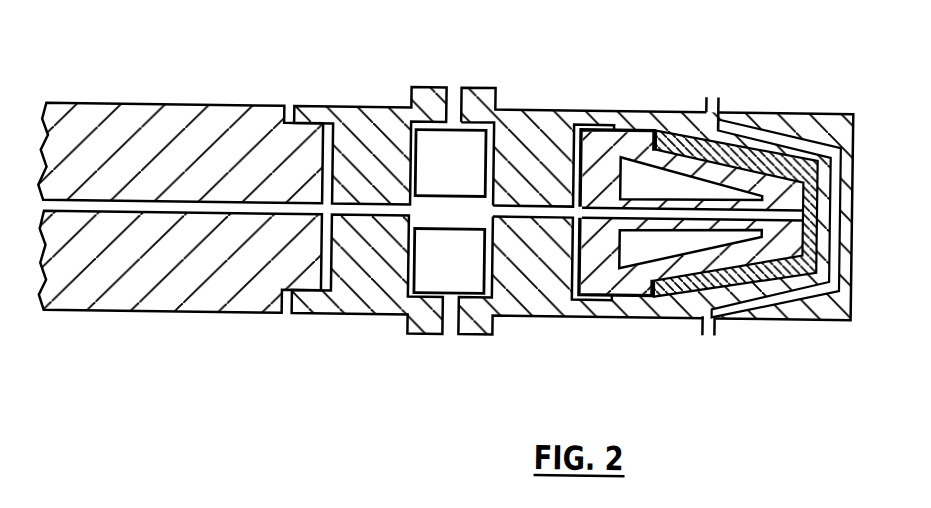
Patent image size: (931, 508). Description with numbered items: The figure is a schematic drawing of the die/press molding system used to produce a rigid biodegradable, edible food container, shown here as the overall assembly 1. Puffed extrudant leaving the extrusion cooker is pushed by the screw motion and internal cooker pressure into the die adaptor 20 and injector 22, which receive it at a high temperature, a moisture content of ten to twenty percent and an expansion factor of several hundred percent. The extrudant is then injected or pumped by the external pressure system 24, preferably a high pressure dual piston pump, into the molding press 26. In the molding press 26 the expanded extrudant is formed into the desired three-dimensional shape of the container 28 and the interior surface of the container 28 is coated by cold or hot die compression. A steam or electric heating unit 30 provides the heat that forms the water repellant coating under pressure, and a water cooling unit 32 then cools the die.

The insulating body 1 is at (221, 315).
The contact carrier 20 is at (354, 316).
The insertion direction arrow 22 is at (448, 346).
The insertion direction arrow 24 is at (450, 72).
The housing 26 is at (789, 308).
The sleeve 28 is at (771, 140).
The wedge-shaped recess 30 is at (634, 175).
The slot 32 is at (710, 345).